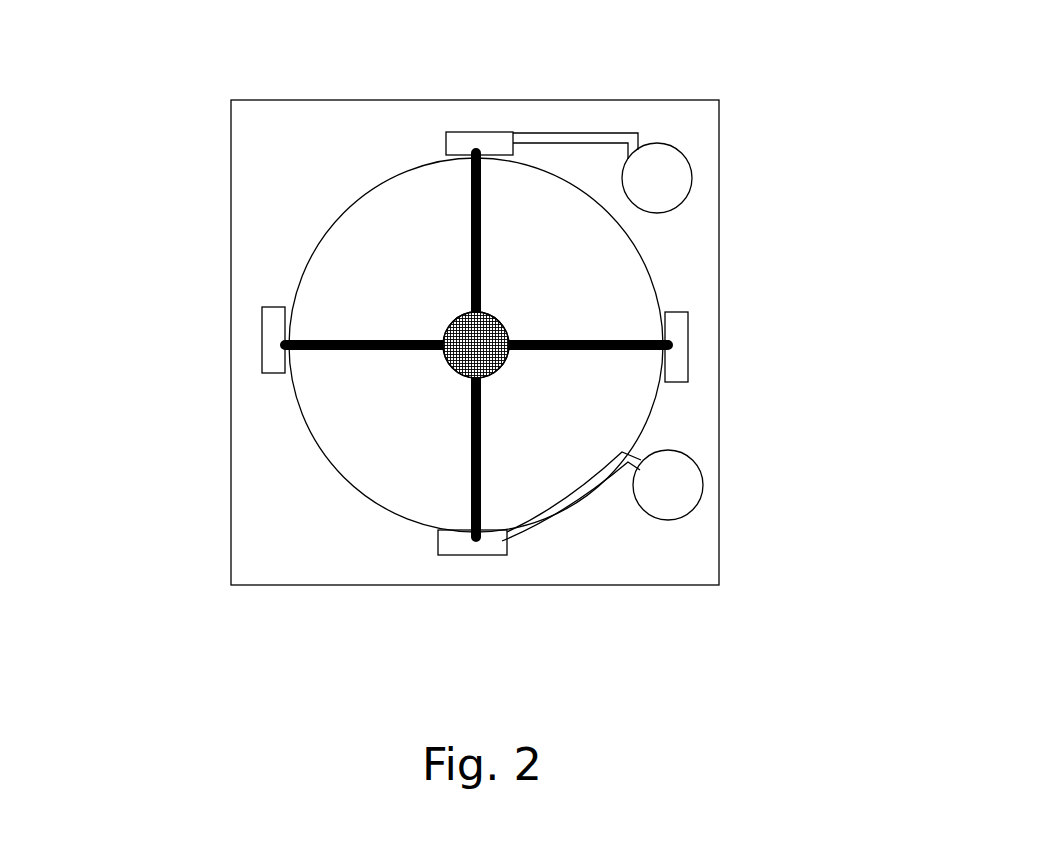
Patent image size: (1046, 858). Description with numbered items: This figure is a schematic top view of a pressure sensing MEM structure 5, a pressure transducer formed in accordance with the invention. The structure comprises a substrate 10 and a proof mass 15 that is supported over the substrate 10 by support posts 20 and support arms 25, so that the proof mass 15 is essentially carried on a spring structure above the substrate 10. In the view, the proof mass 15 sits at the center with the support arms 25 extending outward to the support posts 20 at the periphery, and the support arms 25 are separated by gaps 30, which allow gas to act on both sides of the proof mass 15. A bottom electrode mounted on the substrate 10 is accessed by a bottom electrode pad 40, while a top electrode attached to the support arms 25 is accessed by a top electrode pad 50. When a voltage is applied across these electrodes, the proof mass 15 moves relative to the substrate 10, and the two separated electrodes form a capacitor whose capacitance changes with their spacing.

The pressure sensing MEM structure 5 is at (148, 347).
The substrate 10 is at (231, 500).
The proof mass 15 is at (502, 318).
The support posts 20 is at (270, 325).
The support arms 25 is at (483, 258).
The gaps 30 is at (360, 265).
The bottom electrode pad 40 is at (683, 485).
The top electrode pad 50 is at (693, 163).